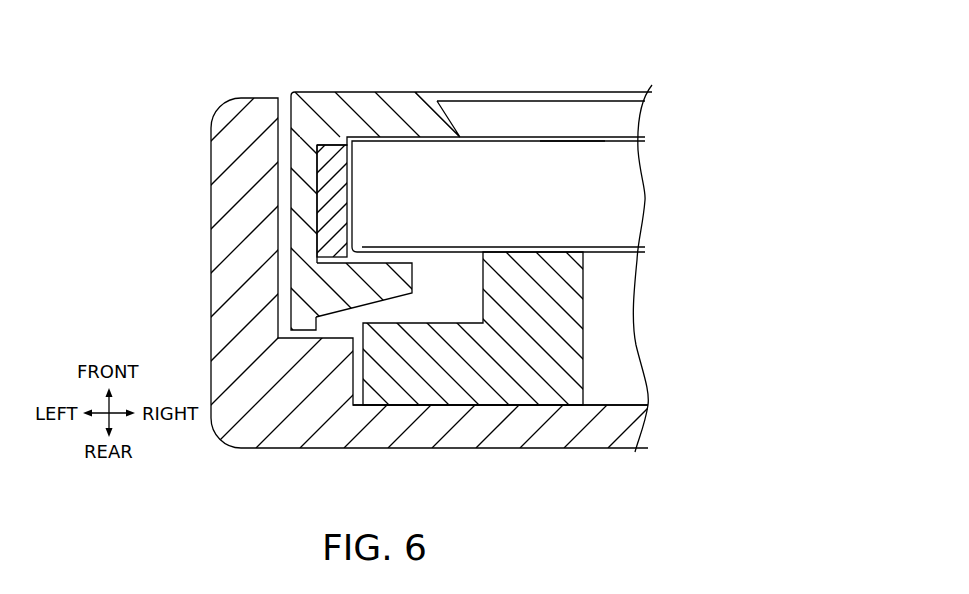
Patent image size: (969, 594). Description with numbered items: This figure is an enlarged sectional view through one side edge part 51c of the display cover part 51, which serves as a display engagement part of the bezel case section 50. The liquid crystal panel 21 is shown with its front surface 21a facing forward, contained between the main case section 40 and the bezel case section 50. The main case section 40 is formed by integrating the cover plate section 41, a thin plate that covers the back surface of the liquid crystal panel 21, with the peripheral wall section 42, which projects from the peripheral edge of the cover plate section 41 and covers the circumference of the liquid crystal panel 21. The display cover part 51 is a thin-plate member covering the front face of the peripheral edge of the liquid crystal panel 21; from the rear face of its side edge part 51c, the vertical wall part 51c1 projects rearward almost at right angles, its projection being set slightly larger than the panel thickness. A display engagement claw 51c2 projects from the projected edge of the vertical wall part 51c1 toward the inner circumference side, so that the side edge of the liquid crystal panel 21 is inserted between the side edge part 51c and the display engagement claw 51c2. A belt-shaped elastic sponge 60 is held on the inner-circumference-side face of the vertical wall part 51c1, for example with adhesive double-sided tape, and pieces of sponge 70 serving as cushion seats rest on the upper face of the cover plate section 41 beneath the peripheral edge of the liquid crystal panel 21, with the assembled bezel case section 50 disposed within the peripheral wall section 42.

The liquid crystal panel 21 is at (615, 195).
The front surface of the liquid crystal panel 21a is at (572, 130).
The main case section 40 is at (178, 333).
The cover plate section 41 is at (477, 427).
The peripheral wall section 42 is at (235, 188).
The bezel case section 50 is at (397, 253).
The display cover part 51 is at (615, 117).
The side edge part 51c is at (357, 102).
The vertical wall part 51c1 is at (301, 215).
The display engagement claw 51c2 is at (393, 278).
The sponge 60 is at (327, 175).
The sponge 70 is at (525, 380).